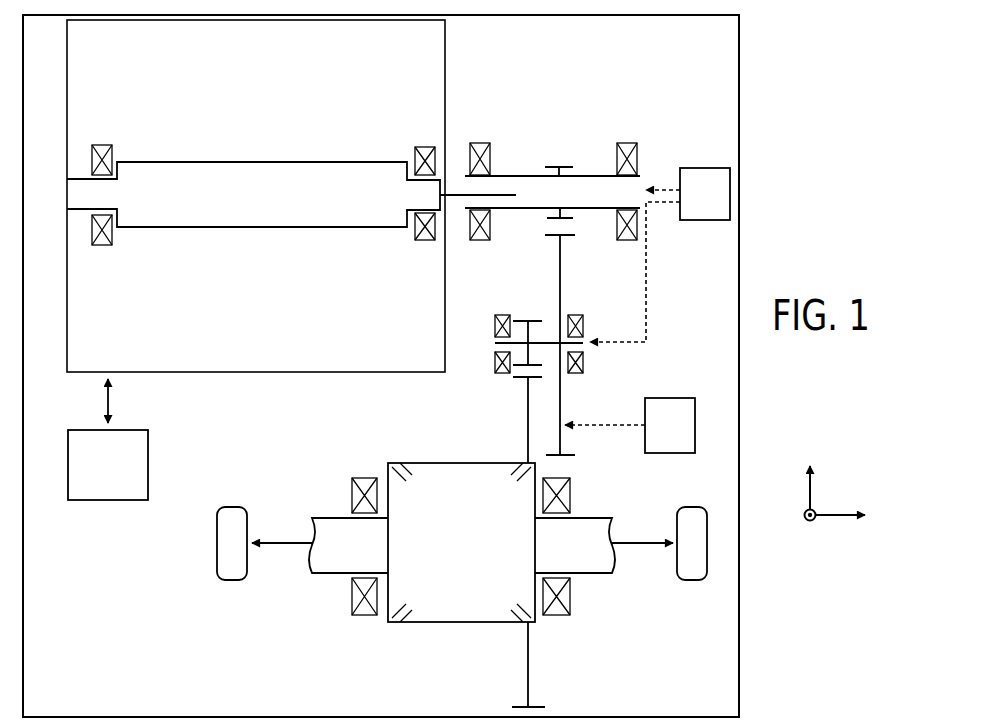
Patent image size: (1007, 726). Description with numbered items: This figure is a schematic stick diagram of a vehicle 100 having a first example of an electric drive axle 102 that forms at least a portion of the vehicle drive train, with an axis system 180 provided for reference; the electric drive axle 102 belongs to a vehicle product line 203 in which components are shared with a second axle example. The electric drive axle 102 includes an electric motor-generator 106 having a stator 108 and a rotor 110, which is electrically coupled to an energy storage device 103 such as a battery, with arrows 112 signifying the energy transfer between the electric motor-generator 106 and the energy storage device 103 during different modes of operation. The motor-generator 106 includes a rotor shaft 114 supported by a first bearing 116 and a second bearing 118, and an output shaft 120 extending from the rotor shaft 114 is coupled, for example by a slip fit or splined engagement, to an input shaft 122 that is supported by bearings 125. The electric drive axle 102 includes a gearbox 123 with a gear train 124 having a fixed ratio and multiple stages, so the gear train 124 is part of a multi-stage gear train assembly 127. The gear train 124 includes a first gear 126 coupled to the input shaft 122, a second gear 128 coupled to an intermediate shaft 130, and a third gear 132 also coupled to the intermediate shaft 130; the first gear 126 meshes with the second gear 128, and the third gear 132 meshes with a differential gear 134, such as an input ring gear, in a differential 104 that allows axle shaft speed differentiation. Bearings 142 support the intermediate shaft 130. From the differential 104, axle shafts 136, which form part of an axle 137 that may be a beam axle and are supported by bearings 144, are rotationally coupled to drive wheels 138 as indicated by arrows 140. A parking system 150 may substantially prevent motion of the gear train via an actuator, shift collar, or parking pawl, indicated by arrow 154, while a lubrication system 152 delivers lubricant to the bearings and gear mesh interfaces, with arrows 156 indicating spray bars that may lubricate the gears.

The vehicle 100 is at (741, 52).
The electric drive axle 102 is at (695, 61).
The energy storage device 103 is at (148, 467).
The differential 104 is at (475, 462).
The electric motor-generator 106 is at (66, 62).
The stator 108 is at (270, 305).
The rotor 110 is at (229, 140).
The arrows 112 is at (111, 402).
The rotor shaft 114 is at (132, 162).
The first bearing 116 is at (101, 144).
The second bearing 118 is at (425, 146).
The output shaft 120 is at (455, 198).
The input shaft 122 is at (517, 174).
The gearbox 123 is at (579, 105).
The gear train 124 is at (663, 127).
The bearings 125 is at (480, 142).
The first gear 126 is at (568, 174).
The multi-stage gear train assembly 127 is at (641, 79).
The second gear 128 is at (563, 272).
The intermediate shaft 130 is at (553, 341).
The third gear 132 is at (520, 318).
The differential gear 134 is at (526, 418).
The axle shafts 136 is at (323, 517).
The axle 137 is at (675, 617).
The drive wheels 138 is at (231, 506).
The arrows 140 is at (643, 547).
The bearings 142 is at (576, 316).
The bearings 144 is at (365, 477).
The parking system 150 is at (668, 397).
The lubrication system 152 is at (705, 222).
The arrow 154 is at (611, 422).
The arrows 156 is at (668, 187).
The axis system 180 is at (842, 485).
The vehicle product line 203 is at (824, 56).